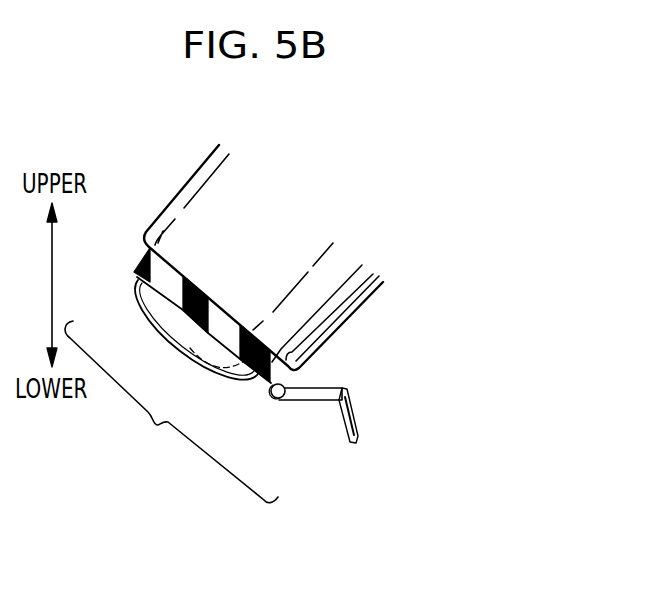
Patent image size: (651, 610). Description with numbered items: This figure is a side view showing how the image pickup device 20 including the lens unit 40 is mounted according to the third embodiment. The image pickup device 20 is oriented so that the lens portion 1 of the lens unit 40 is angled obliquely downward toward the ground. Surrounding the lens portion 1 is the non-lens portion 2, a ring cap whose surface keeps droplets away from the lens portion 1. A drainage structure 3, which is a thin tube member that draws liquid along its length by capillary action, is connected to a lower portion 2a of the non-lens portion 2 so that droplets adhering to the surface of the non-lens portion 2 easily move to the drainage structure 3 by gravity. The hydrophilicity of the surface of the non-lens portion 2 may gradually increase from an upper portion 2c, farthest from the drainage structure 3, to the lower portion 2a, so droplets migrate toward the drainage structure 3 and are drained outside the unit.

The lens portion 1 is at (186, 396).
The non-lens portion 2 is at (147, 353).
The lower portion 2a is at (236, 431).
The upper portion 2c is at (105, 305).
The drainage structure 3 is at (312, 442).
The image pickup device 20 is at (433, 343).
The lens unit 40 is at (171, 412).